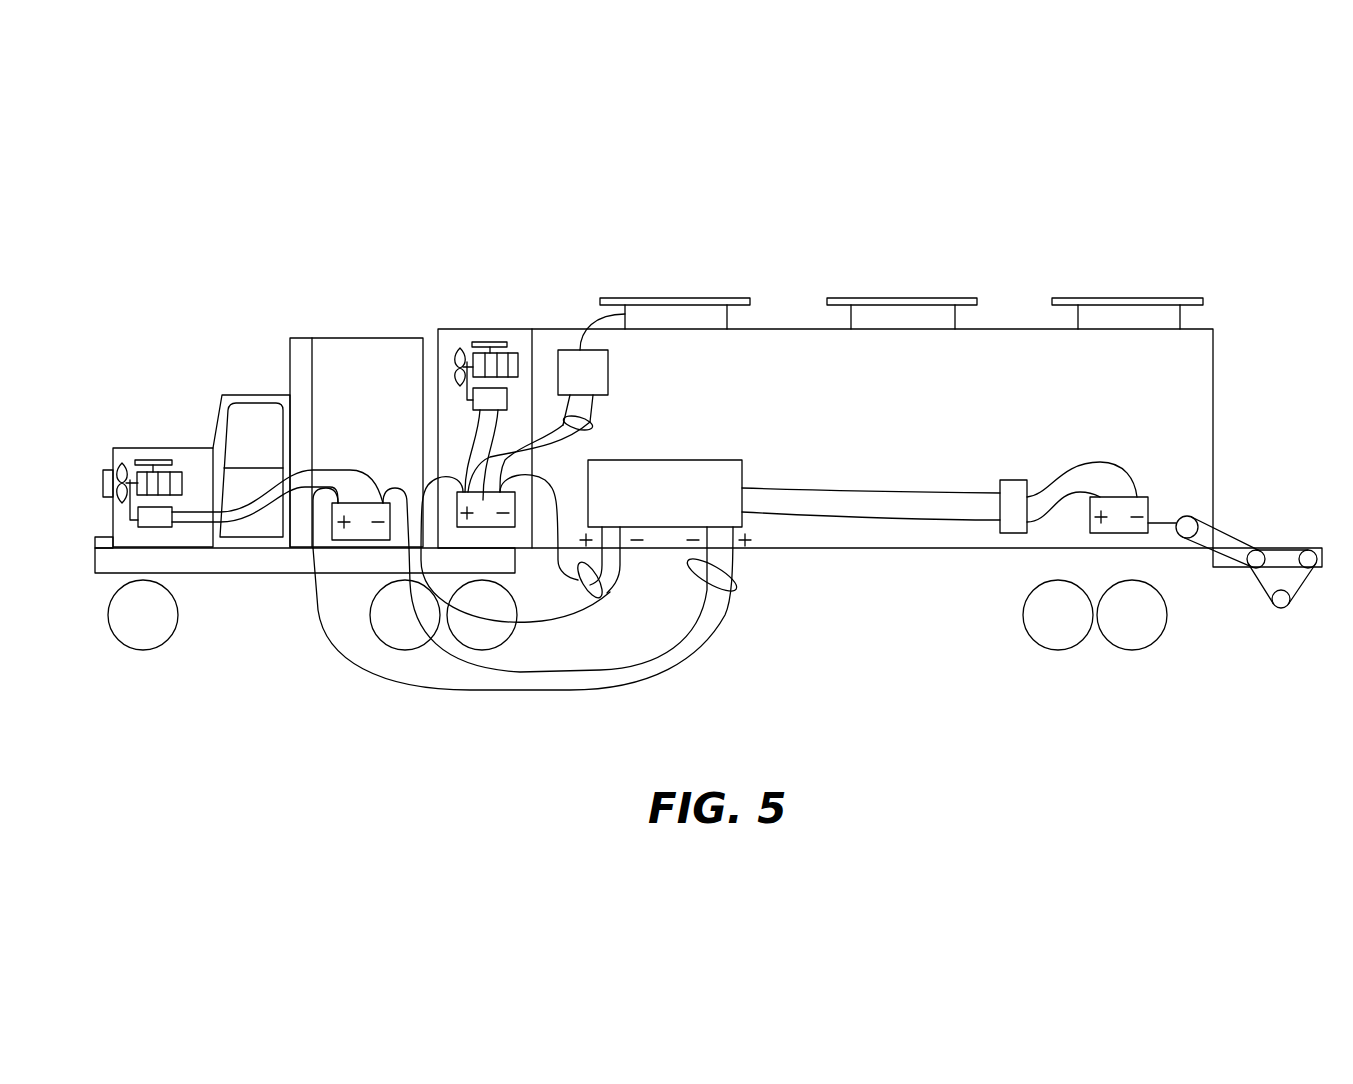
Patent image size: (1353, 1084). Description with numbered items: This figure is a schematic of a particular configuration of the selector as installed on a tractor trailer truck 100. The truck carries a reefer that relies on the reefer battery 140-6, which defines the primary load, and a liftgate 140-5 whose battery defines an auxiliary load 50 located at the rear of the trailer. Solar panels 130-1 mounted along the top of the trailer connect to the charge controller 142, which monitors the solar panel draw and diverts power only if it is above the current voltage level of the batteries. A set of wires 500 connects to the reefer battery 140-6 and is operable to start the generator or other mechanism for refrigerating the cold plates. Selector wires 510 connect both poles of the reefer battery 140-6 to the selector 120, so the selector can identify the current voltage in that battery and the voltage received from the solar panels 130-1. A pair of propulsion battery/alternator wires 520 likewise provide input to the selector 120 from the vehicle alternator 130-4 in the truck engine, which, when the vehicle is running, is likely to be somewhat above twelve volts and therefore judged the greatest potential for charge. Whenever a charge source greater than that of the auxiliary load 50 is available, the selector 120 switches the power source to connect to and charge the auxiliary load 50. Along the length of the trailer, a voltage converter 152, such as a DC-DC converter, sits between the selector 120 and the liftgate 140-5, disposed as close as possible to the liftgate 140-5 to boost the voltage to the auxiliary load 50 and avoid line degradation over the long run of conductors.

The tractor trailer truck 100 is at (236, 236).
The solar panels 130-1 is at (702, 297).
The vehicle alternator 130-4 is at (160, 527).
The reefer battery 140-6 is at (475, 490).
The charge controller 142 is at (595, 370).
The set of wires 500 is at (598, 422).
The selector 120 is at (697, 460).
The selector wires 510 is at (607, 598).
The propulsion battery/alternator wires 520 is at (740, 590).
The voltage converter 152 is at (1010, 480).
The auxiliary load 50 is at (1147, 497).
The liftgate 140-5 is at (1292, 548).